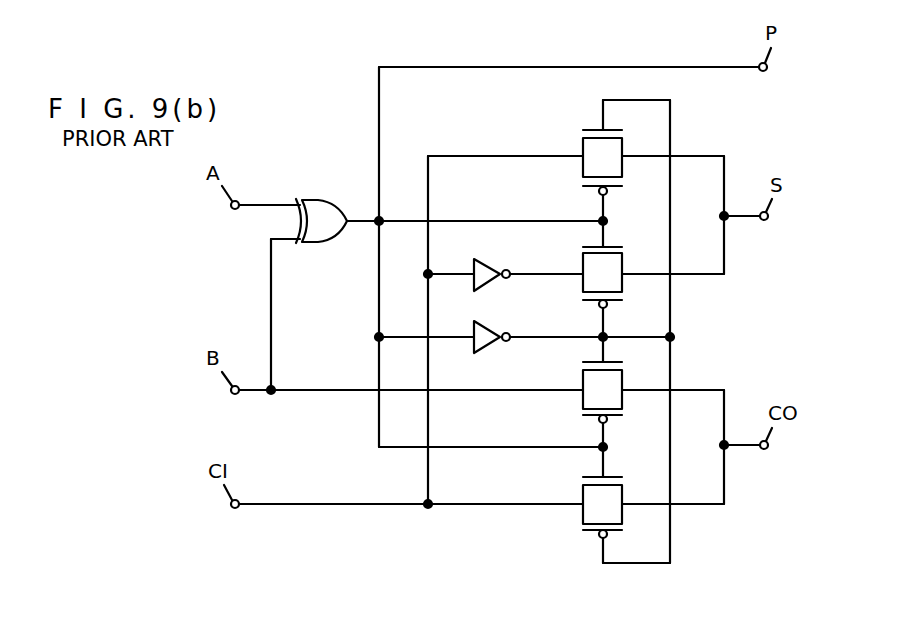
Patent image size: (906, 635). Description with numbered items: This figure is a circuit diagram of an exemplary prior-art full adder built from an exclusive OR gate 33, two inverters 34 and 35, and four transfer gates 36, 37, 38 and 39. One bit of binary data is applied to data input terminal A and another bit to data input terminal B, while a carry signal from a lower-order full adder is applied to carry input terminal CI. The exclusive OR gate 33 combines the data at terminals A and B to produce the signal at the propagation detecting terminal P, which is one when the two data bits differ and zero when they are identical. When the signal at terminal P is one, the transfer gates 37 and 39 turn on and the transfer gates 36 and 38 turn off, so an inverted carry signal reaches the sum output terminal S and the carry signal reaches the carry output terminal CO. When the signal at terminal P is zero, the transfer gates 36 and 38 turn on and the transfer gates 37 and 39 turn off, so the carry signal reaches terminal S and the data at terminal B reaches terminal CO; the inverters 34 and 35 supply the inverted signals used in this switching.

The exclusive OR gate 33 is at (323, 210).
The inverter 34 is at (493, 272).
The inverter 35 is at (493, 334).
The transfer gate 36 is at (617, 168).
The transfer gate 37 is at (617, 282).
The transfer gate 38 is at (617, 398).
The transfer gate 39 is at (617, 513).